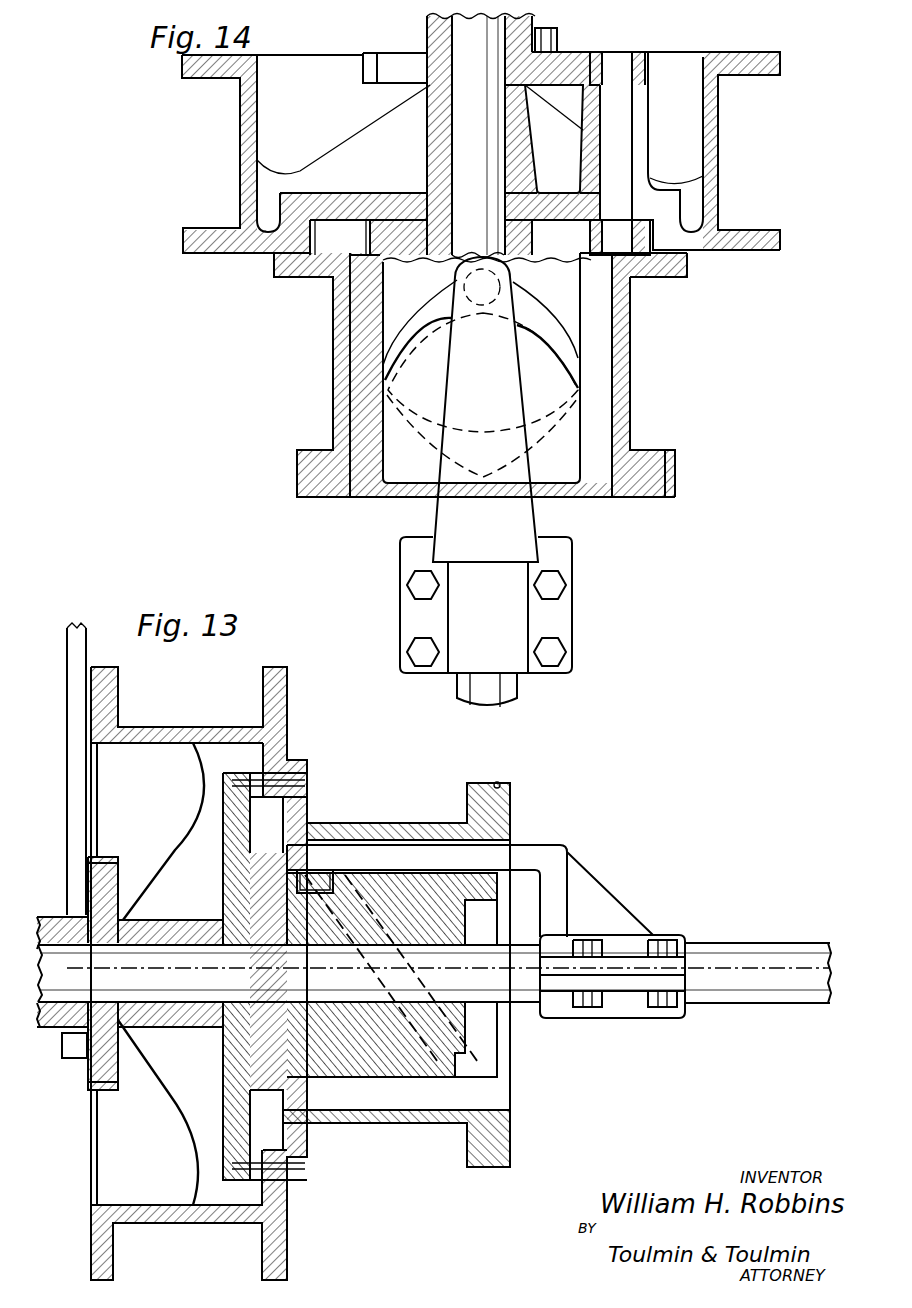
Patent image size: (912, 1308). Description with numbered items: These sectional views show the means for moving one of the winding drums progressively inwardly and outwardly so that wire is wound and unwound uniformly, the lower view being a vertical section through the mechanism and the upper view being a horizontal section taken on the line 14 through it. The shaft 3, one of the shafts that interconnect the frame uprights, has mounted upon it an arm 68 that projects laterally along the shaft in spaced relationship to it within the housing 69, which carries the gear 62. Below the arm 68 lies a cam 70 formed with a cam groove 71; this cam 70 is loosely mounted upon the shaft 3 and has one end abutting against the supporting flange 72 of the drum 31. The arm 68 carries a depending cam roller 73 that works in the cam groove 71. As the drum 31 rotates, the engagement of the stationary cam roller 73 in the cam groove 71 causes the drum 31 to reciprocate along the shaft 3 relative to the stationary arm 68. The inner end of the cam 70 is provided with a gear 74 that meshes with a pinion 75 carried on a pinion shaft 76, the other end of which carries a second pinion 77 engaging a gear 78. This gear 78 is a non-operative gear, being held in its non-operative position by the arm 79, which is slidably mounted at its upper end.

In FIG. 14, the shaft 3 is at (507, 683).
In FIG. 13, the shaft 3 is at (760, 960).
In FIG. 13, the section line 14— 14 is at (173, 967).
In FIG. 14, the drum 31 is at (257, 118).
In FIG. 13, the drum 31 is at (130, 740).
In FIG. 14, the gear 62 is at (660, 468).
In FIG. 13, the gear 62 is at (498, 783).
In FIG. 14, the arm 68 is at (508, 505).
In FIG. 13, the arm 68 is at (590, 883).
In FIG. 14, the housing 69 is at (632, 363).
In FIG. 13, the housing 69 is at (405, 823).
In FIG. 13, the cam 70 is at (347, 1063).
In FIG. 14, the cam groove 71 is at (400, 353).
In FIG. 13, the cam groove 71 is at (477, 1063).
In FIG. 14, the supporting flange 72 is at (393, 198).
In FIG. 13, the supporting flange 72 is at (230, 872).
In FIG. 14, the cam roller 73 is at (503, 277).
In FIG. 13, the cam roller 73 is at (323, 877).
In FIG. 14, the gear 74 is at (586, 270).
In FIG. 13, the gear 74 is at (280, 857).
In FIG. 14, the pinion 75 is at (647, 277).
In FIG. 14, the pinion shaft 76 is at (616, 152).
In FIG. 14, the pinion 77 is at (642, 57).
In FIG. 14, the gear 78 is at (570, 63).
In FIG. 13, the gear 78 is at (110, 870).
In FIG. 14, the arm 79 is at (557, 43).
In FIG. 13, the arm 79 is at (73, 840).